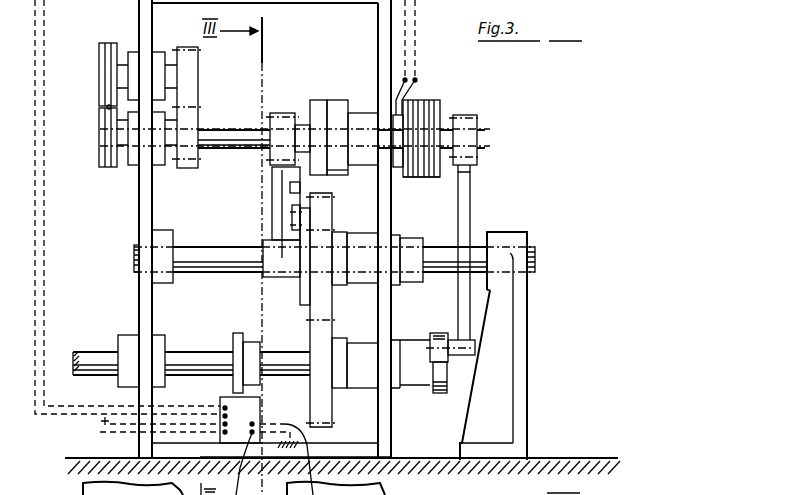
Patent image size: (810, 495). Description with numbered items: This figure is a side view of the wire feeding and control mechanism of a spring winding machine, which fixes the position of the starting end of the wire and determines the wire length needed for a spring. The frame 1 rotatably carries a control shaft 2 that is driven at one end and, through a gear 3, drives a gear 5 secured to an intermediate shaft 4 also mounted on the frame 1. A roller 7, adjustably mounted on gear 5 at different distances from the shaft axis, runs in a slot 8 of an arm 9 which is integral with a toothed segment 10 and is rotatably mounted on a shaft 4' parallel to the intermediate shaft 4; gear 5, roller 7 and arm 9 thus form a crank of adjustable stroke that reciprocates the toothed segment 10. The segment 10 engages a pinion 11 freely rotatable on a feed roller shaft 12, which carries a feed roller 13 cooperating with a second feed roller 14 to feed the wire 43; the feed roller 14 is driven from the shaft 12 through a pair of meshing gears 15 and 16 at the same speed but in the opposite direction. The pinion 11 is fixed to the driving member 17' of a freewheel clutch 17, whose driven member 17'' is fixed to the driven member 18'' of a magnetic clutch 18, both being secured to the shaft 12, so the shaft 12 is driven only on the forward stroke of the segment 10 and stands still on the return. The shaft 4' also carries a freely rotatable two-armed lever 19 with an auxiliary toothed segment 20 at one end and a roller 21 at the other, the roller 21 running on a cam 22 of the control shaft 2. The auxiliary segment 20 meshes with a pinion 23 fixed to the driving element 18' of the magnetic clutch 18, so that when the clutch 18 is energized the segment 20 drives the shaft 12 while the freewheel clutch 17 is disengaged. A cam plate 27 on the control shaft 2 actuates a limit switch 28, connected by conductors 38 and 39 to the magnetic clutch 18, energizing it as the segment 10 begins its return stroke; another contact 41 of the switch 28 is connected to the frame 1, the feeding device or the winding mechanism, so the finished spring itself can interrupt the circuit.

The frame 1 is at (147, 205).
The control shaft 2 is at (97, 357).
The gear 3 is at (332, 412).
The intermediate shaft 4 is at (334, 246).
The shaft 4' is at (198, 248).
The gear 5 is at (330, 291).
The roller 7 is at (297, 222).
The slot 8 is at (295, 187).
The arm 9 is at (285, 172).
The toothed segment 10 is at (262, 157).
The pinion 11 is at (282, 113).
The feed roller shaft 12 is at (213, 136).
The feed roller 13 is at (99, 143).
The feed roller 14 is at (99, 80).
The gear 15 is at (194, 168).
The gear 16 is at (196, 69).
The freewheel clutch 17 is at (350, 126).
The driving member of freewheel clutch 17' is at (312, 126).
The driven member of freewheel clutch 17'' is at (349, 185).
The magnetic clutch 18 is at (419, 88).
The driving element of magnetic clutch 18' is at (436, 192).
The driven member of magnetic clutch 18'' is at (411, 192).
The two-armed lever 19 is at (471, 224).
The auxiliary toothed segment 20 is at (479, 166).
The roller 21 is at (436, 340).
The cam 22 is at (437, 394).
The pinion 23 is at (465, 115).
The cam plate 27 is at (238, 343).
The limit switch 28 is at (256, 408).
The conductor 38 is at (36, 212).
The conductor 39 is at (45, 237).
The contact 41 is at (271, 459).
The wire 43 is at (107, 106).